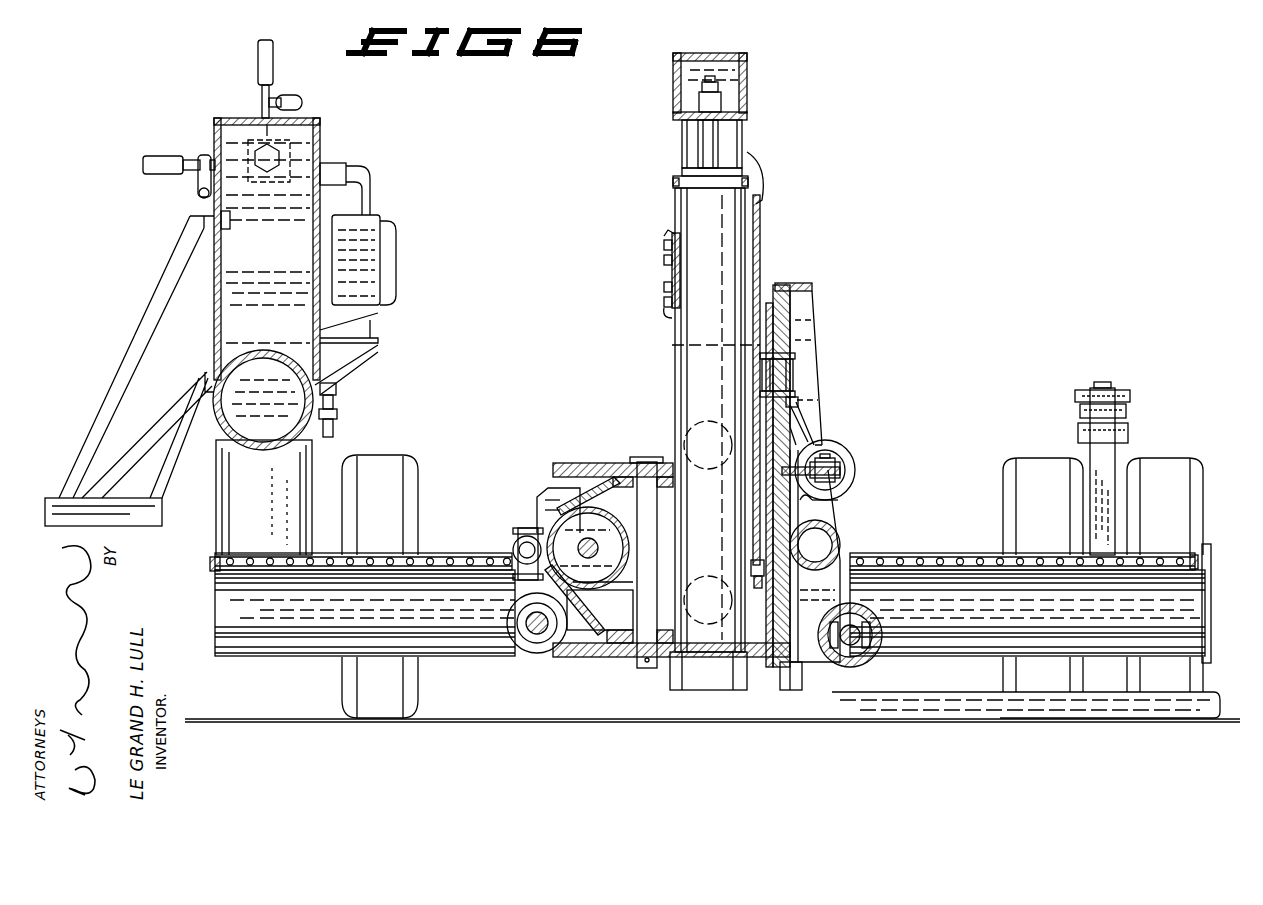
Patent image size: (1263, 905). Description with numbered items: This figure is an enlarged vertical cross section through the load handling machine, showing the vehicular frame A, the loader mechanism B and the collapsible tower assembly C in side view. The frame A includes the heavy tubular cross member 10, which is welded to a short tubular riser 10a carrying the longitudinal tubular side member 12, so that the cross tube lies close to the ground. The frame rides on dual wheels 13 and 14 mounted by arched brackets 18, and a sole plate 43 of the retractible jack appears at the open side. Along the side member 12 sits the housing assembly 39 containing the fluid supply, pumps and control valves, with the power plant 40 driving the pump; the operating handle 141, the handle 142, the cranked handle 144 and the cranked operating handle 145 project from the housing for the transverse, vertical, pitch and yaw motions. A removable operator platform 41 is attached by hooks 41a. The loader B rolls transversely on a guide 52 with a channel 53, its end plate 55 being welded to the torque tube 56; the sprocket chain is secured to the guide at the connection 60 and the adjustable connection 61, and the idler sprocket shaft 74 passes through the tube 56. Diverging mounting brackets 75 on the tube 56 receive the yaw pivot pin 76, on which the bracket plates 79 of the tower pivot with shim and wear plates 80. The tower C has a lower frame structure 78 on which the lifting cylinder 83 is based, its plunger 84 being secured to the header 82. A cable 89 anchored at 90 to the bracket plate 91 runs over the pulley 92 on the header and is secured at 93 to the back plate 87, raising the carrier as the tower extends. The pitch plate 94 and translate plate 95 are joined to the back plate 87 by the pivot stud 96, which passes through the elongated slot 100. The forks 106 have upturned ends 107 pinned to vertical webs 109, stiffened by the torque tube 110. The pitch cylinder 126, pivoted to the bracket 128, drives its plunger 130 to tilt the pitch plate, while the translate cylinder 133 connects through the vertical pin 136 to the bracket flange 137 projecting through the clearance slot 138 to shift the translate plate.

The cross member 10 is at (458, 656).
The tubular riser 10a is at (278, 515).
The side member 12 is at (258, 352).
The dual wheels 13 is at (418, 456).
The dual wheels 14 is at (1010, 452).
The arched bracket 18 is at (1115, 458).
The housing assembly 39 is at (298, 226).
The power plant 40 is at (380, 268).
The platform 41 is at (60, 497).
The hooks 41a is at (232, 228).
The sole plate 43 is at (1210, 545).
The guide 52 is at (490, 640).
The channel 53 is at (445, 578).
The end plate 55 is at (547, 488).
The torque tube 56 is at (582, 505).
The chain connection 60 is at (1198, 562).
The adjustable chain connection 61 is at (212, 575).
The shaft 74 is at (622, 463).
The mounting bracket 75 is at (590, 537).
The yaw pivot pin 76 is at (647, 457).
The lower frame structure 78 is at (712, 670).
The bracket plate 79 is at (548, 487).
The shim and wear plate 80 is at (620, 570).
The header 82 is at (750, 98).
The cylinder 83 is at (728, 279).
The plunger 84 is at (722, 148).
The back plate 87 is at (790, 303).
The cable 89 is at (760, 245).
The cable anchor 90 is at (668, 268).
The bracket plate 91 is at (667, 298).
The pulley 92 is at (760, 172).
The cable connection 93 is at (751, 565).
The pitch plate 94 is at (798, 325).
The translate plate 95 is at (828, 440).
The pivot stud 96 is at (798, 358).
The elongated slot 100 is at (795, 397).
The load handling fork 106 is at (968, 698).
The upwardly turned fork end 107 is at (840, 590).
The vertical web 109 is at (825, 420).
The torque tube 110 is at (840, 541).
The cylinder 126 is at (876, 620).
The bracket 128 is at (785, 690).
The plunger 130 is at (862, 655).
The cylinder 133 is at (848, 482).
The vertical pin 136 is at (835, 498).
The bracket flange 137 is at (848, 470).
The clearance slot 138 is at (845, 455).
The operating handle 141 is at (270, 82).
The handle 142 is at (188, 160).
The cranked handle 144 is at (197, 186).
The cranked operating handle 145 is at (300, 100).
The vehicular frame A is at (210, 555).
The loader mechanism B is at (837, 412).
The tower assembly C is at (776, 188).